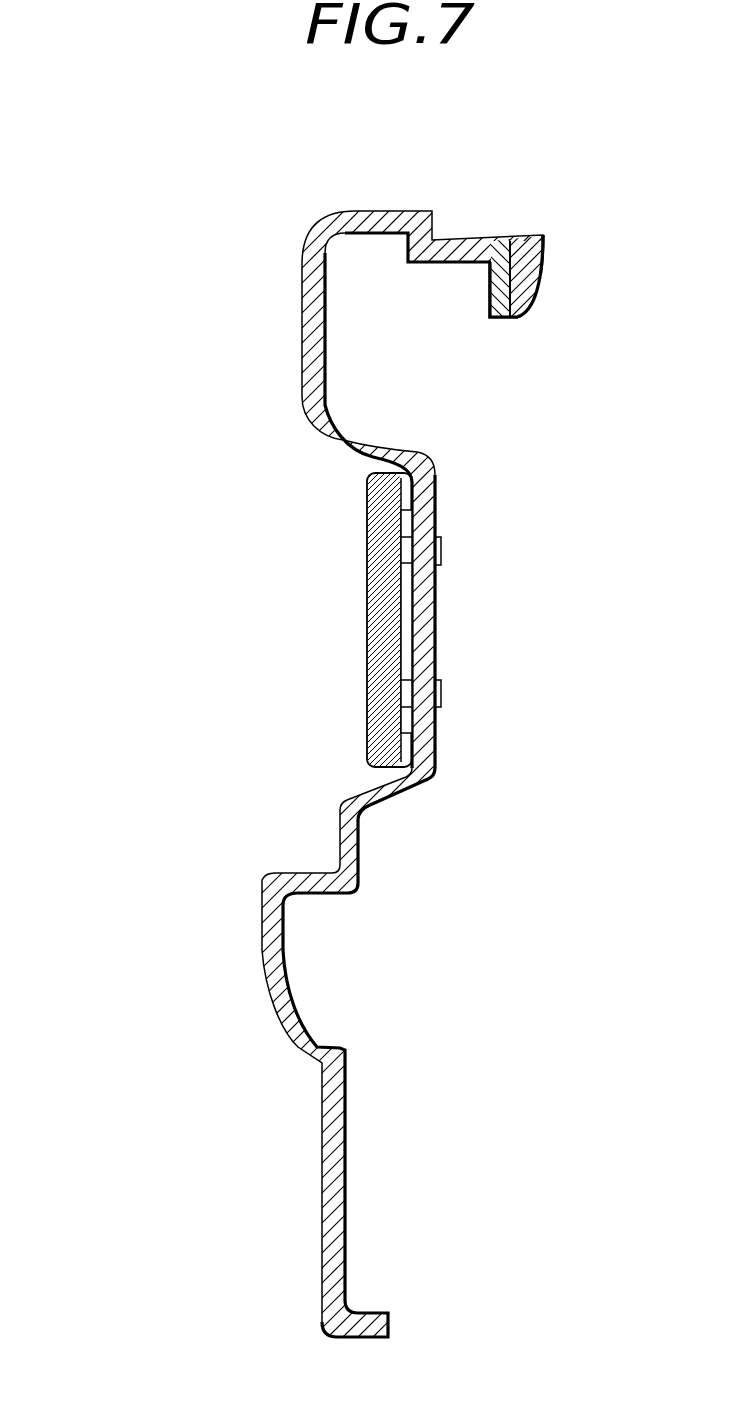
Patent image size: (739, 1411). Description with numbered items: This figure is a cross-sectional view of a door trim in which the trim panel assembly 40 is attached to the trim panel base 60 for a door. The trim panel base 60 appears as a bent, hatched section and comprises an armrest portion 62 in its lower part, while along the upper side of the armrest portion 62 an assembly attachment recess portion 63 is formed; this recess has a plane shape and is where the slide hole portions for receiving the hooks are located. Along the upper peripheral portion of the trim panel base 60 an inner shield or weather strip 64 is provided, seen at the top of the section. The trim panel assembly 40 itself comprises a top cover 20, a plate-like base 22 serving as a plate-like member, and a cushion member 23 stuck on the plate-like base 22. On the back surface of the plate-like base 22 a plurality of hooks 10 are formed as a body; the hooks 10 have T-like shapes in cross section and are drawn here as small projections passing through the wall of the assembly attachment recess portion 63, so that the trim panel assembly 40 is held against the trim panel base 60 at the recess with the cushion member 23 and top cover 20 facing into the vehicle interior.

The hooks 10 is at (442, 549).
The top cover 20 is at (387, 630).
The plate-like base 22 is at (405, 612).
The cushion member 23 is at (368, 567).
The trim panel assembly 40 is at (180, 552).
The trim panel base 60 is at (300, 276).
The armrest portion 62 is at (262, 887).
The assembly attachment recess portion 63 is at (433, 453).
The weather strip 64 is at (560, 258).